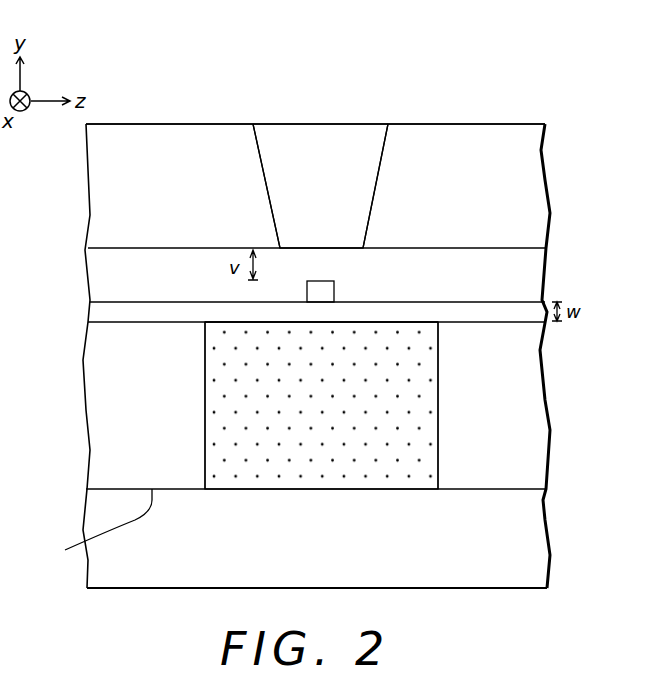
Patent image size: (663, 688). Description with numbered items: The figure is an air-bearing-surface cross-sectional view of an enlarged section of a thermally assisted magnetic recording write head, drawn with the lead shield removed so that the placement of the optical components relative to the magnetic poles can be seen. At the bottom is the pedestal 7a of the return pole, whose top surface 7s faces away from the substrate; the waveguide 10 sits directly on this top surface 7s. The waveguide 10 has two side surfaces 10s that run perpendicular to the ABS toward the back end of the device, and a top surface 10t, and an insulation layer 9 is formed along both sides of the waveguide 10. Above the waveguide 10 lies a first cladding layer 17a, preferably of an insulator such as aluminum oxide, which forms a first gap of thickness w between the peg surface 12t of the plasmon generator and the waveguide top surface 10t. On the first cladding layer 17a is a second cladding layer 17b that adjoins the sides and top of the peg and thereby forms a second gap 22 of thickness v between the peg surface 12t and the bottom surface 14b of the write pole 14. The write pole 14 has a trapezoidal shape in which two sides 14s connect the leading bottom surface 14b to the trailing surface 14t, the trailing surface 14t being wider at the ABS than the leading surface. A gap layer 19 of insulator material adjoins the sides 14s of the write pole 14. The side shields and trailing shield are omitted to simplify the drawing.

The pedestal 7a is at (530, 543).
The top surface of the pedestal 7s is at (94, 523).
The insulation layer 9 is at (100, 468).
The waveguide 10 is at (205, 398).
The side surfaces of the waveguide 10s is at (205, 430).
The top surface of the waveguide 10t is at (405, 322).
The peg surface 12t is at (325, 291).
The write pole 14 is at (313, 140).
The bottom surface of the write pole 14b is at (337, 248).
The sides of the write pole 14s is at (266, 178).
The trailing surface 14t is at (345, 124).
The first cladding layer 17a is at (105, 312).
The second cladding layer 17b is at (100, 275).
The gap layer 19 is at (178, 138).
The second gap 22 is at (318, 270).